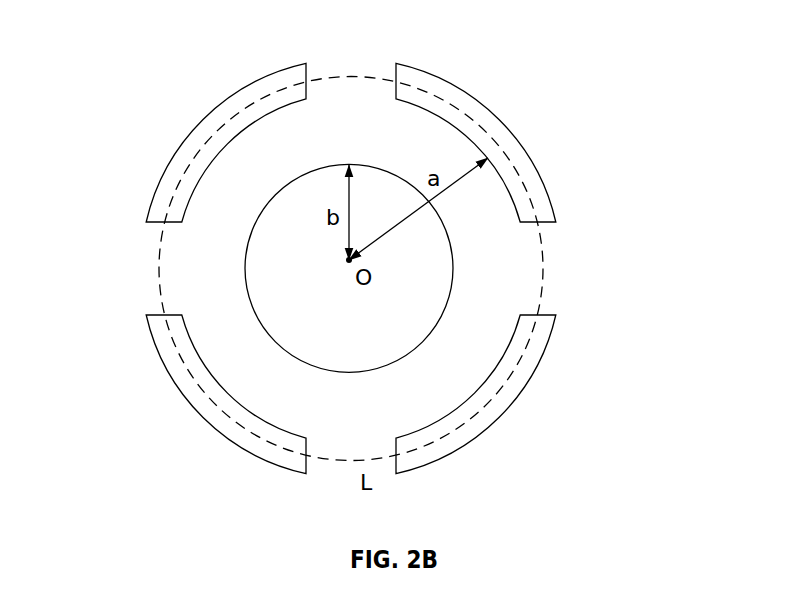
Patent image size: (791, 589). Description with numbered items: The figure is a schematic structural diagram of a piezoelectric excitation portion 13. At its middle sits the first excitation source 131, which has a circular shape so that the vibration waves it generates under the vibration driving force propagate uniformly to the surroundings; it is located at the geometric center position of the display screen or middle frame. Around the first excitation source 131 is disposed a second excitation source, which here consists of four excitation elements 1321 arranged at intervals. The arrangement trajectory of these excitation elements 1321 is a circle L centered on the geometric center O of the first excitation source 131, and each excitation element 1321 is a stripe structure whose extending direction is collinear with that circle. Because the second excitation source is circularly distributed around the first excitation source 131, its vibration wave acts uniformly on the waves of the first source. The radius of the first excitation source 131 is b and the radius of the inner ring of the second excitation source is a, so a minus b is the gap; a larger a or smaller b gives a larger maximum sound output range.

The piezoelectric excitation portion 13 is at (152, 88).
The excitation element 1321 is at (386, 266).
The first excitation source 131 is at (434, 268).